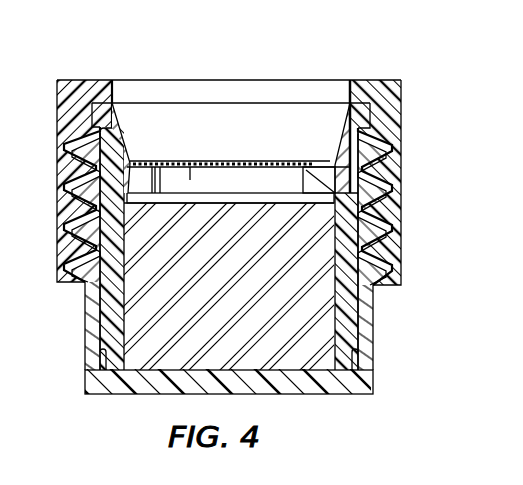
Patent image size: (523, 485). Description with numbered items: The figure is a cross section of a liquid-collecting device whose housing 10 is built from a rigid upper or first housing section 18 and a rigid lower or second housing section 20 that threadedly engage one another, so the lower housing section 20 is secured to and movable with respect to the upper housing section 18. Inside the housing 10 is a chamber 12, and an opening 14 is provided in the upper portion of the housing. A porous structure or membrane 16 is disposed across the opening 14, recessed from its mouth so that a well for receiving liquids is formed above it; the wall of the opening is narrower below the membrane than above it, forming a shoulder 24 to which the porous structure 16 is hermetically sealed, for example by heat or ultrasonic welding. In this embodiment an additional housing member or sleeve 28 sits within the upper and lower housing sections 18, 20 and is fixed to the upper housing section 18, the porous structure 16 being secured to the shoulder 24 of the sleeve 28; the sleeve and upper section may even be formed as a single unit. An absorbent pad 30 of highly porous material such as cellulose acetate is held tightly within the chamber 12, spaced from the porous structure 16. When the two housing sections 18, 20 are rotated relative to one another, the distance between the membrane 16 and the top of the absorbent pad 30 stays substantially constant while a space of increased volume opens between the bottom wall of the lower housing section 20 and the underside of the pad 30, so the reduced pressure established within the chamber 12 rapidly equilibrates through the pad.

The housing 10 is at (261, 210).
The chamber 12 is at (253, 200).
The opening 14 is at (217, 122).
The porous structure or membrane 16 is at (172, 160).
The upper housing section 18 is at (384, 103).
The lower housing section 20 is at (355, 383).
The shoulder 24 is at (310, 172).
The sleeve 28 is at (110, 315).
The absorbent pad 30 is at (312, 333).